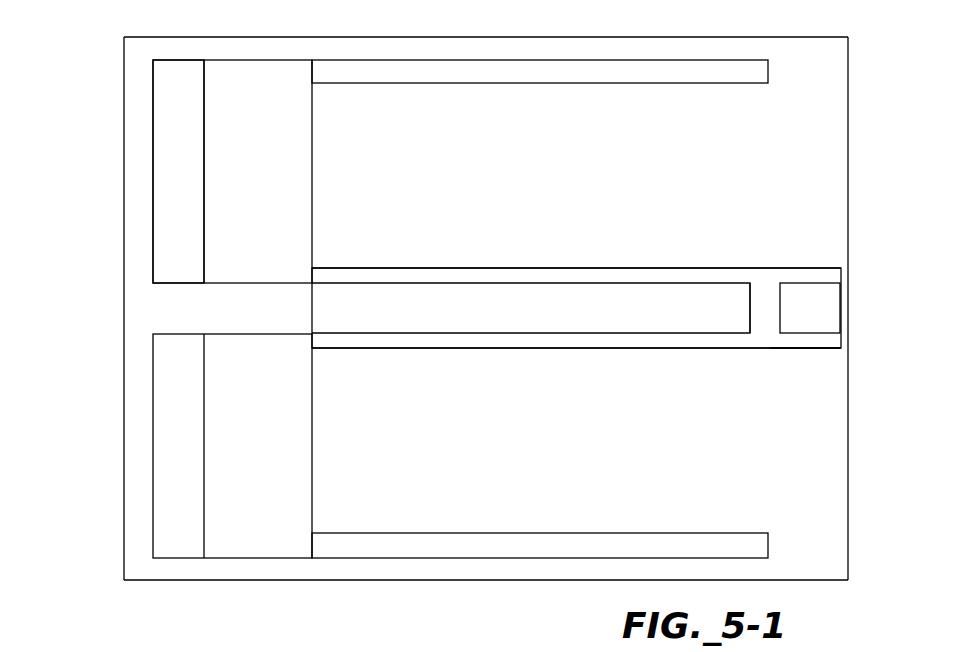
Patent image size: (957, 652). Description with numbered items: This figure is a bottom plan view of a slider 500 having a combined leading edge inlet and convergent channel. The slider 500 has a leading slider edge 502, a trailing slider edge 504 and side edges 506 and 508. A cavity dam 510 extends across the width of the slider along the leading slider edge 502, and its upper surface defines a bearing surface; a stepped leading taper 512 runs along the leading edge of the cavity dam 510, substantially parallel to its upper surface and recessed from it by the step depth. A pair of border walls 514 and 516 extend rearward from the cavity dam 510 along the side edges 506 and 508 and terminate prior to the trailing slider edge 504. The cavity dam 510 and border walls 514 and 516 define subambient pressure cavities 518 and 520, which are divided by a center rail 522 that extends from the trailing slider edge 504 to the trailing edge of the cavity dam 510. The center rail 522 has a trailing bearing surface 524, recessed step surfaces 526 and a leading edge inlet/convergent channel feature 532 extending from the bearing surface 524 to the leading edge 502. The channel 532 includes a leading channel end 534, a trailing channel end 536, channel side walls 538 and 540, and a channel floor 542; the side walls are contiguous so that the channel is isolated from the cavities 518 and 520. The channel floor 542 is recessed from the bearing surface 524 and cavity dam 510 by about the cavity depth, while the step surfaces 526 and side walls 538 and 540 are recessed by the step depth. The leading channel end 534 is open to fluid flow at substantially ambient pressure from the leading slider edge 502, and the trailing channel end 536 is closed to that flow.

The slider 500 is at (116, 62).
The leading slider edge 502 is at (124, 458).
The trailing slider edge 504 is at (848, 485).
The side edge 506 is at (282, 37).
The side edge 508 is at (225, 580).
The cavity dam 510 is at (228, 58).
The stepped leading taper 512 is at (153, 175).
The border wall 514 is at (600, 60).
The border wall 516 is at (400, 558).
The subambient pressure cavity 518 is at (484, 163).
The subambient pressure cavity 520 is at (484, 457).
The center rail 522 is at (611, 311).
The trailing bearing surface 524 is at (815, 308).
The recessed step surface 526 is at (808, 348).
The leading edge inlet/convergent channel feature 532 is at (516, 305).
The leading channel end 534 is at (158, 311).
The trailing channel end 536 is at (745, 298).
The channel side wall 538 is at (426, 268).
The channel side wall 540 is at (437, 348).
The channel floor 542 is at (405, 320).